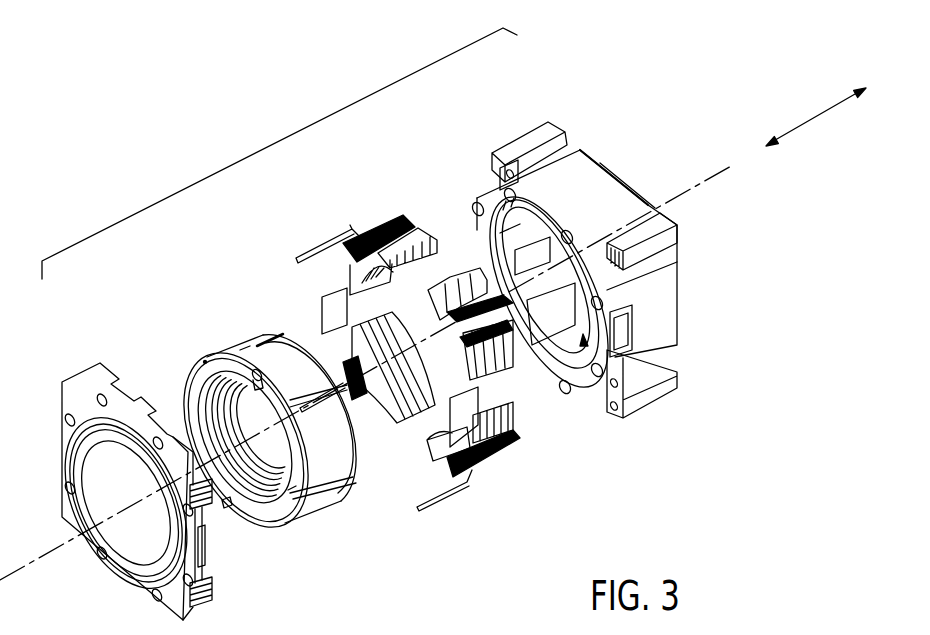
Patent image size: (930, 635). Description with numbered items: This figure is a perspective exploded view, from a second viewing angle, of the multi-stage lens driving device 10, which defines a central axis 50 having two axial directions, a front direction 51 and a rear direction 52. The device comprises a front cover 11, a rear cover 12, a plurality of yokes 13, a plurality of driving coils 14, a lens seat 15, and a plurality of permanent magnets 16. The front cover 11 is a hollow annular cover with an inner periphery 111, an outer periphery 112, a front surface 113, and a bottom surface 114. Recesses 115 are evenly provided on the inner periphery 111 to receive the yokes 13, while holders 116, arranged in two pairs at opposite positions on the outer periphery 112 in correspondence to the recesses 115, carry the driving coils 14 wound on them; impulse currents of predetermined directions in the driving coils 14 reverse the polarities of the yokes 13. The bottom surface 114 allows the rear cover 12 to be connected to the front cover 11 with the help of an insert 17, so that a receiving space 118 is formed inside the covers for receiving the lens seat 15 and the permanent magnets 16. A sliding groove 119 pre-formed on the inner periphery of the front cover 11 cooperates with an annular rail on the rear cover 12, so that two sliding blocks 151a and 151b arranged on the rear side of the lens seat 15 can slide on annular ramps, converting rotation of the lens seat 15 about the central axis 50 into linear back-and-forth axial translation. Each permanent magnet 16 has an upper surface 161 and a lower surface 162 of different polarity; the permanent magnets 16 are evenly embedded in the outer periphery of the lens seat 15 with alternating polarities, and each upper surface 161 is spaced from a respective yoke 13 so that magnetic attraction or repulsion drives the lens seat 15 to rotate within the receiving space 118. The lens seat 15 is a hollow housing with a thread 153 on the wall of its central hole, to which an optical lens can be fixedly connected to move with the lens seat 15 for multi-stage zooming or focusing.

The multi-stage lens driving device 10 is at (273, 144).
The front cover 11 is at (591, 255).
The rear cover 12 is at (72, 360).
The yokes 13 is at (312, 238).
The driving coils 14 is at (396, 218).
The lens seat 15 is at (255, 416).
The permanent magnets 16 is at (328, 500).
The insert 17 is at (322, 296).
The central axis 50 is at (706, 178).
The front direction 51 is at (772, 135).
The rear direction 52 is at (846, 95).
The inner periphery 111 is at (547, 360).
The outer periphery 112 is at (585, 170).
The front surface 113 is at (640, 173).
The bottom surface 114 is at (648, 284).
The recesses 115 is at (495, 200).
The holders 116 is at (562, 148).
The receiving space 118 is at (585, 345).
The sliding groove 119 is at (478, 238).
The sliding block 151a is at (293, 500).
The sliding block 151b is at (230, 510).
The thread 153 is at (218, 350).
The upper surface 161 is at (262, 342).
The lower surface 162 is at (245, 348).